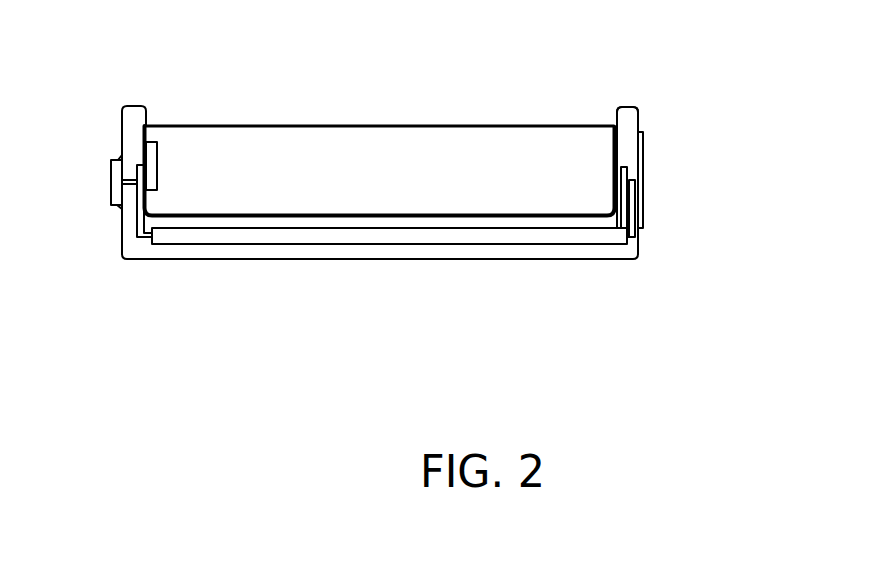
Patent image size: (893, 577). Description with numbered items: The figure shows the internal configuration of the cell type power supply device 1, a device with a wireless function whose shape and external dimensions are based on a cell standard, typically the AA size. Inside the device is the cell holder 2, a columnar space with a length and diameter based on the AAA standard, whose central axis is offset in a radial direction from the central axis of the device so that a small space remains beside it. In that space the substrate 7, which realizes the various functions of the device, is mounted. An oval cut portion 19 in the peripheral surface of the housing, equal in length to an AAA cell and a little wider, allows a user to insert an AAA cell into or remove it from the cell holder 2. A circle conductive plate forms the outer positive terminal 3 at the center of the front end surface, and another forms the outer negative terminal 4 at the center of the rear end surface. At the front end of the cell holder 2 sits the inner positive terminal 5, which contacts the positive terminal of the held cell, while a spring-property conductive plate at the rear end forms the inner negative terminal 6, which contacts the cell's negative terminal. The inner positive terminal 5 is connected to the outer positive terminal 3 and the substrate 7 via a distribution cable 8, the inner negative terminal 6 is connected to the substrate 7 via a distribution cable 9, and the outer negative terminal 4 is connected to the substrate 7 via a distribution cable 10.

The cell type power supply device 1 is at (315, 259).
The cell holder 2 is at (383, 145).
The outer positive terminal 3 is at (112, 181).
The outer negative terminal 4 is at (643, 195).
The inner positive terminal 5 is at (157, 160).
The inner negative terminal 6 is at (613, 126).
The substrate 7 is at (500, 245).
The distribution cable 8 is at (136, 237).
The distribution cable 9 is at (624, 180).
The distribution cable 10 is at (633, 233).
The cut portion 19 is at (455, 115).